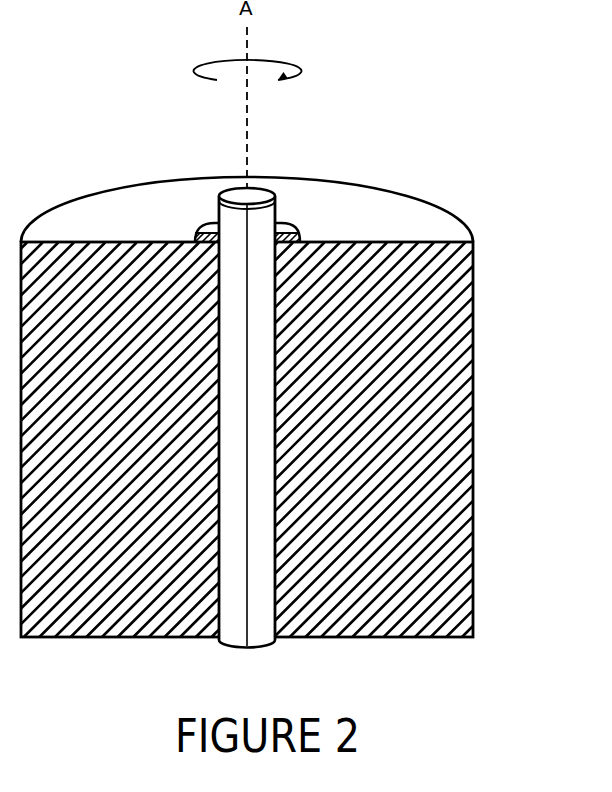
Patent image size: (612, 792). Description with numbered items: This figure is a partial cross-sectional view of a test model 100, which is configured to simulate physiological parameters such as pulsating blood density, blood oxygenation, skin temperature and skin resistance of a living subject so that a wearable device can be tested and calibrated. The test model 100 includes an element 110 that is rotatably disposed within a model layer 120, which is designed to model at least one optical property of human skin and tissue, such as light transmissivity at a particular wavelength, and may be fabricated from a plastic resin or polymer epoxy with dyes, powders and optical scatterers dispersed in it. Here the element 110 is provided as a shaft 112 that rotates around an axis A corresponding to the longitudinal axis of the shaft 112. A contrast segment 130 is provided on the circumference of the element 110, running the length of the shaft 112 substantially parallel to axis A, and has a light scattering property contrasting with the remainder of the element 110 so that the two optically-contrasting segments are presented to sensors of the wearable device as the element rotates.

The test model 100 is at (472, 171).
The element 110 is at (262, 381).
The shaft 112 is at (257, 195).
The model layer 120 is at (475, 360).
The contrast segment 130 is at (240, 229).